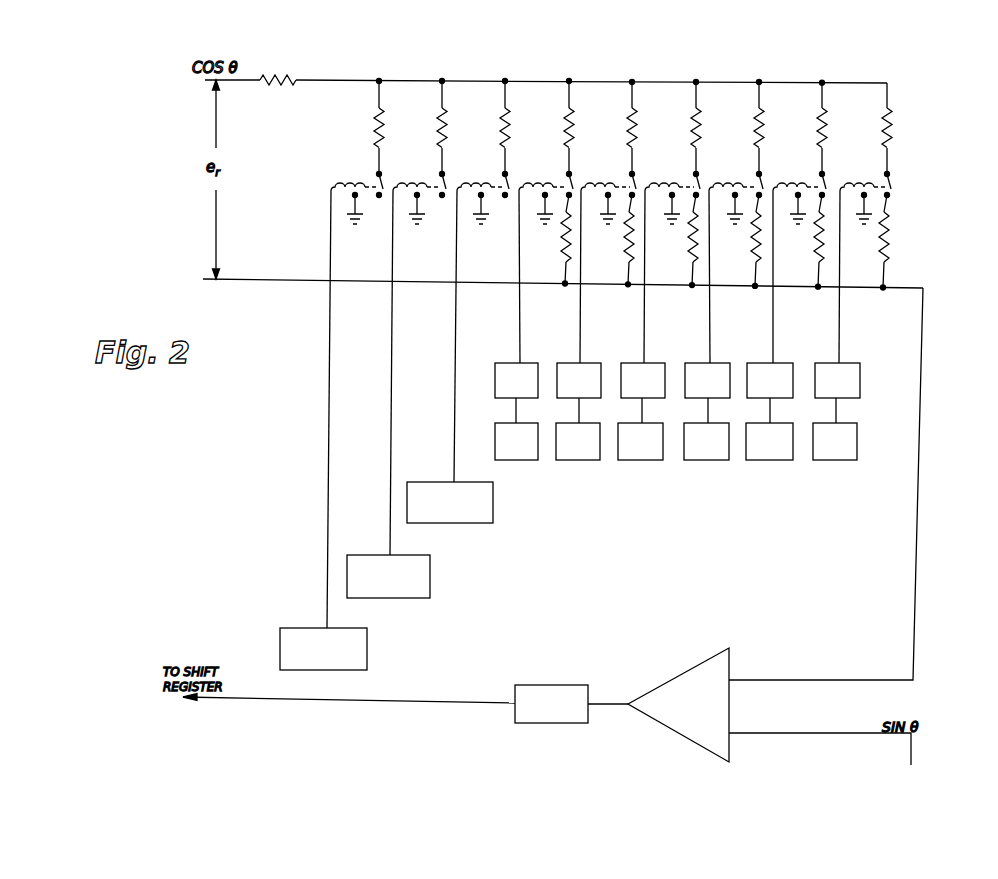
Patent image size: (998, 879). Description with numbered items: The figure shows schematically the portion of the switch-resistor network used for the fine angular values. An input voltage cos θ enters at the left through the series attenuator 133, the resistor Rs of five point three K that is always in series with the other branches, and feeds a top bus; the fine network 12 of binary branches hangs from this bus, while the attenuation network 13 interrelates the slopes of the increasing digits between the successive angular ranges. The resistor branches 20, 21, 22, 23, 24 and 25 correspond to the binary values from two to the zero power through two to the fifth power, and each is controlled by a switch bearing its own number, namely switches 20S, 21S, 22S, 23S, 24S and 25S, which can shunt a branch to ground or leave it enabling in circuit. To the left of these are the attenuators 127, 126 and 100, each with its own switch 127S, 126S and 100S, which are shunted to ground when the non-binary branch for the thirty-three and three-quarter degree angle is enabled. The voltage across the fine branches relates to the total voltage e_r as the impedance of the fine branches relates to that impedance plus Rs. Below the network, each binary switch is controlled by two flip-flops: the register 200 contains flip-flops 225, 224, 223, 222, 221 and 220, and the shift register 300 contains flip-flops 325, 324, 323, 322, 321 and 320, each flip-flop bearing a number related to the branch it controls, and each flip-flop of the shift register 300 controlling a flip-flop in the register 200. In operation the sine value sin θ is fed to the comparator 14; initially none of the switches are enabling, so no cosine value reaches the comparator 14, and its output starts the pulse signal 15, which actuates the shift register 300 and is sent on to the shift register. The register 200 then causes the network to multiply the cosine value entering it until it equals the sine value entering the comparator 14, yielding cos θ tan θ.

The fine network 12 is at (722, 82).
The attenuation network 13 is at (477, 80).
The comparator 14 is at (690, 672).
The pulse signal 15 is at (575, 685).
The resistor branch 20 is at (892, 115).
The resistor branch 21 is at (832, 112).
The resistor branch 22 is at (765, 112).
The resistor branch 23 is at (703, 112).
The resistor branch 24 is at (637, 111).
The resistor branch 25 is at (577, 111).
The switch 20S is at (891, 190).
The switch 21S is at (826, 186).
The switch 22S is at (765, 186).
The switch 23S is at (702, 186).
The switch 24S is at (637, 186).
The switch 25S is at (572, 186).
The attenuator 100 is at (509, 112).
The switch 100S is at (504, 185).
The attenuator 126 is at (442, 112).
The switch 126S is at (446, 185).
The attenuator 127 is at (382, 110).
The switch 127S is at (382, 185).
The attenuator 133 is at (297, 74).
The register 200 is at (860, 384).
The flip-flop 220 is at (855, 363).
The flip-flop 221 is at (785, 363).
The flip-flop 222 is at (720, 363).
The flip-flop 223 is at (652, 363).
The flip-flop 224 is at (590, 363).
The flip-flop 225 is at (533, 363).
The shift register 300 is at (857, 446).
The flip-flop 320 is at (835, 460).
The flip-flop 321 is at (785, 460).
The flip-flop 322 is at (716, 460).
The flip-flop 323 is at (650, 460).
The flip-flop 324 is at (588, 460).
The flip-flop 325 is at (525, 460).